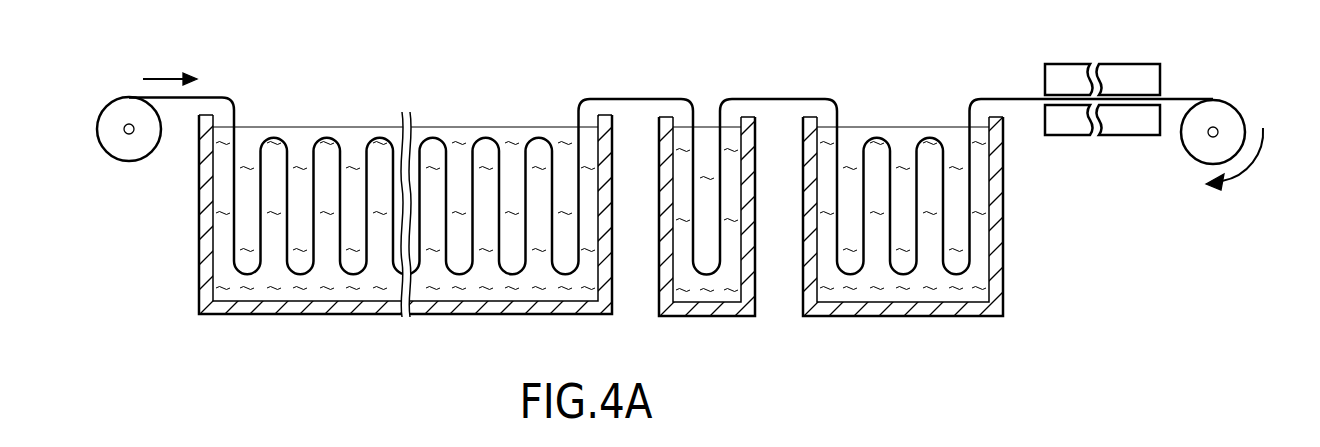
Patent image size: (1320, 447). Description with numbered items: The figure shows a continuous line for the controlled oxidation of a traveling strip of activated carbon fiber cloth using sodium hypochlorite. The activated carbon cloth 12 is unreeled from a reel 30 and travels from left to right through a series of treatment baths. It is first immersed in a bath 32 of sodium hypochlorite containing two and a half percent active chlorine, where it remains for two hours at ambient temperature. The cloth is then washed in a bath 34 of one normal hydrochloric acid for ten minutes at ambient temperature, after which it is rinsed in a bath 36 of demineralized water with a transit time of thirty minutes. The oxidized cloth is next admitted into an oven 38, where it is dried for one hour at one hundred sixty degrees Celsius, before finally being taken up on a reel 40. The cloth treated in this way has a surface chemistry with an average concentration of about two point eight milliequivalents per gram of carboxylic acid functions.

The activated carbon cloth 12 is at (208, 93).
The reel 30 is at (130, 153).
The bath of sodium hypochlorite 32 is at (335, 308).
The bath of hydrochloric acid 34 is at (693, 312).
The bath of demineralized water 36 is at (908, 312).
The oven 38 is at (1125, 128).
The reel 40 is at (1225, 108).